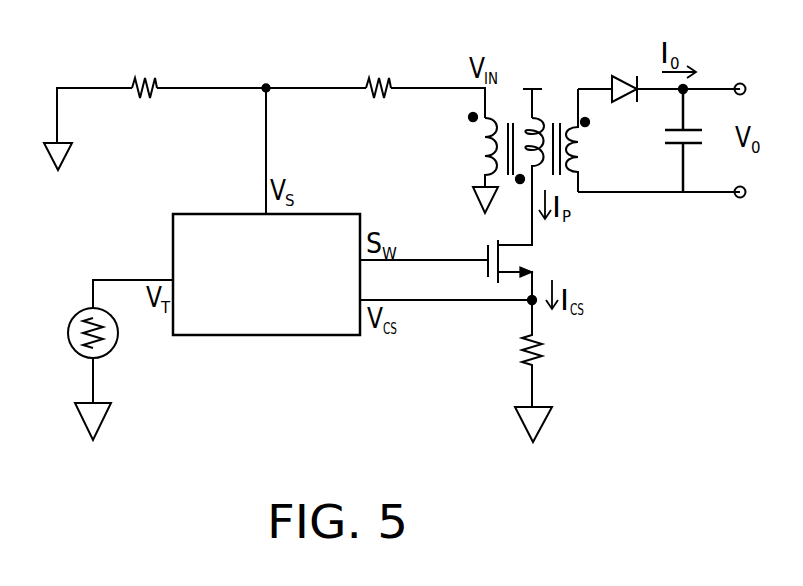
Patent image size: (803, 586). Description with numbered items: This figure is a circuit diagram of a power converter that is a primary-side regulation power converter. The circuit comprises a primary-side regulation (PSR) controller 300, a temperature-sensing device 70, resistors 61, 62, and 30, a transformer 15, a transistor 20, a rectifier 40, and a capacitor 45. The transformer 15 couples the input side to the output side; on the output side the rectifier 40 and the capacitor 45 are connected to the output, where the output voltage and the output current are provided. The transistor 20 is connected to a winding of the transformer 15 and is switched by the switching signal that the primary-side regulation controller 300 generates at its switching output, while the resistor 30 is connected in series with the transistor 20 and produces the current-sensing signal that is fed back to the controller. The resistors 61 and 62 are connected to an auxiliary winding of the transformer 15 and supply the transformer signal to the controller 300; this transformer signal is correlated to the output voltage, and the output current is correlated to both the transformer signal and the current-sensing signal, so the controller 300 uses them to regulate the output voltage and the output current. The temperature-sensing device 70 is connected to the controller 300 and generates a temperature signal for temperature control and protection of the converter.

The primary-side regulation (PSR) controller 300 is at (217, 214).
The resistor 62 is at (143, 101).
The resistor 61 is at (378, 102).
The transformer 15 is at (553, 112).
The rectifier 40 is at (620, 77).
The capacitor 45 is at (665, 146).
The transistor 20 is at (524, 268).
The resistor 30 is at (527, 339).
The temperature-sensing device 70 is at (68, 336).